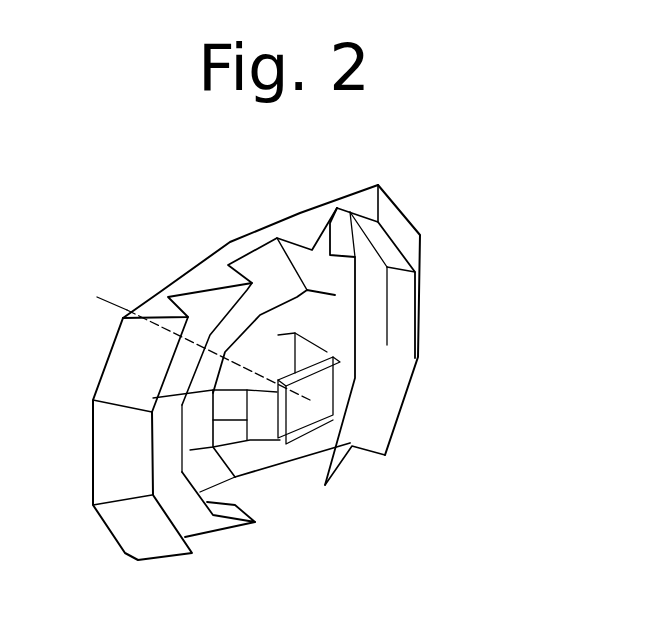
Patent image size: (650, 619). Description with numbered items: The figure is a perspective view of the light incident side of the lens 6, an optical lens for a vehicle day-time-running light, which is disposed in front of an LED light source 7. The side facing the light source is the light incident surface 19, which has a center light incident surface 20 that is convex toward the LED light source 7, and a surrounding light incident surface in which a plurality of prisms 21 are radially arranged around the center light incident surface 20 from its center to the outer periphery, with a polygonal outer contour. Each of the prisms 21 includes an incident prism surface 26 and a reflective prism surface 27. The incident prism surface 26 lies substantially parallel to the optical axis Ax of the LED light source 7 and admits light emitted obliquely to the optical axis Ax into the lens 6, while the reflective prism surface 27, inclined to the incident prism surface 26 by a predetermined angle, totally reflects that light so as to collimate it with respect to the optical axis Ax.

The lens 6 is at (358, 162).
The LED light source 7 is at (307, 463).
The light incident surface 19 is at (403, 478).
The center light incident surface 20 is at (262, 403).
The prisms 21 is at (233, 325).
The incident prism surface 26 is at (340, 345).
The reflective prism surface 27 is at (310, 270).
The optical axis Ax is at (113, 300).